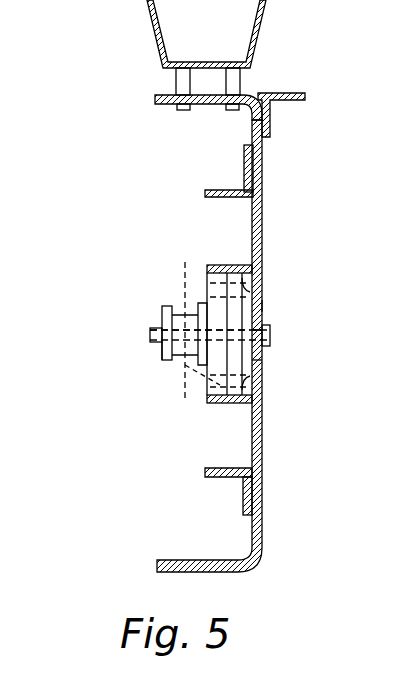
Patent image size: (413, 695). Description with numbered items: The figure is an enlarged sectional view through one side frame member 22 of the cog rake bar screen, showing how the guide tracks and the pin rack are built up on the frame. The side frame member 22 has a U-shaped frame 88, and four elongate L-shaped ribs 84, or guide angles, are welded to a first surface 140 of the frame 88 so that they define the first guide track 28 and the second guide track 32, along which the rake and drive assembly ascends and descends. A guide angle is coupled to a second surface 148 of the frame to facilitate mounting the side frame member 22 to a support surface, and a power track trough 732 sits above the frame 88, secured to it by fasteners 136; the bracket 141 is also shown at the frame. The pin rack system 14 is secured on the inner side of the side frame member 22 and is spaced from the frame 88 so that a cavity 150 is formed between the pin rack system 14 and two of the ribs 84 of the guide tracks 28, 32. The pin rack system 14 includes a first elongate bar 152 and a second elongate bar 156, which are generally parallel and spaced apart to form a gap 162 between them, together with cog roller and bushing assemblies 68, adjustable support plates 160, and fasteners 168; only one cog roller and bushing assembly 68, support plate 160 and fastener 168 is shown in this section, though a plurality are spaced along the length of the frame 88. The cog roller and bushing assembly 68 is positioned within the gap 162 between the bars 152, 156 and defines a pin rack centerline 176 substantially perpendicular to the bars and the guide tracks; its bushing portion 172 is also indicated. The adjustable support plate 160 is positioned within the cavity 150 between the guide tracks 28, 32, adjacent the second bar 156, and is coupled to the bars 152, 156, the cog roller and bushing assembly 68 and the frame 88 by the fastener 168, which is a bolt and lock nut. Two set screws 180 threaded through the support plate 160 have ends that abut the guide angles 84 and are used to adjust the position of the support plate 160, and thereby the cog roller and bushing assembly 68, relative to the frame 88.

The V-shaped bracket 732 is at (250, 63).
The fasteners 136 is at (232, 83).
The mounting bracket 141 is at (308, 97).
The first surface 140 is at (248, 130).
The second surface 148 is at (258, 157).
The ribs 84 is at (208, 191).
The first guide track 28 is at (234, 244).
The set screws 180 is at (262, 276).
The pin rack centerline 176 is at (185, 262).
The adjustable support plate 160 is at (205, 290).
The second elongate bar 156 is at (198, 305).
The bolt shank 172 is at (160, 318).
The pin rack system 14 is at (132, 333).
The fastener 168 is at (272, 306).
The cavity 150 is at (254, 348).
The first elongate bar 152 is at (162, 358).
The cog roller and bushing assembly 68 is at (262, 364).
The gap 162 is at (172, 372).
The second guide track 32 is at (232, 449).
The side frame member 22 is at (181, 333).
The U-shaped frame 88 is at (258, 530).